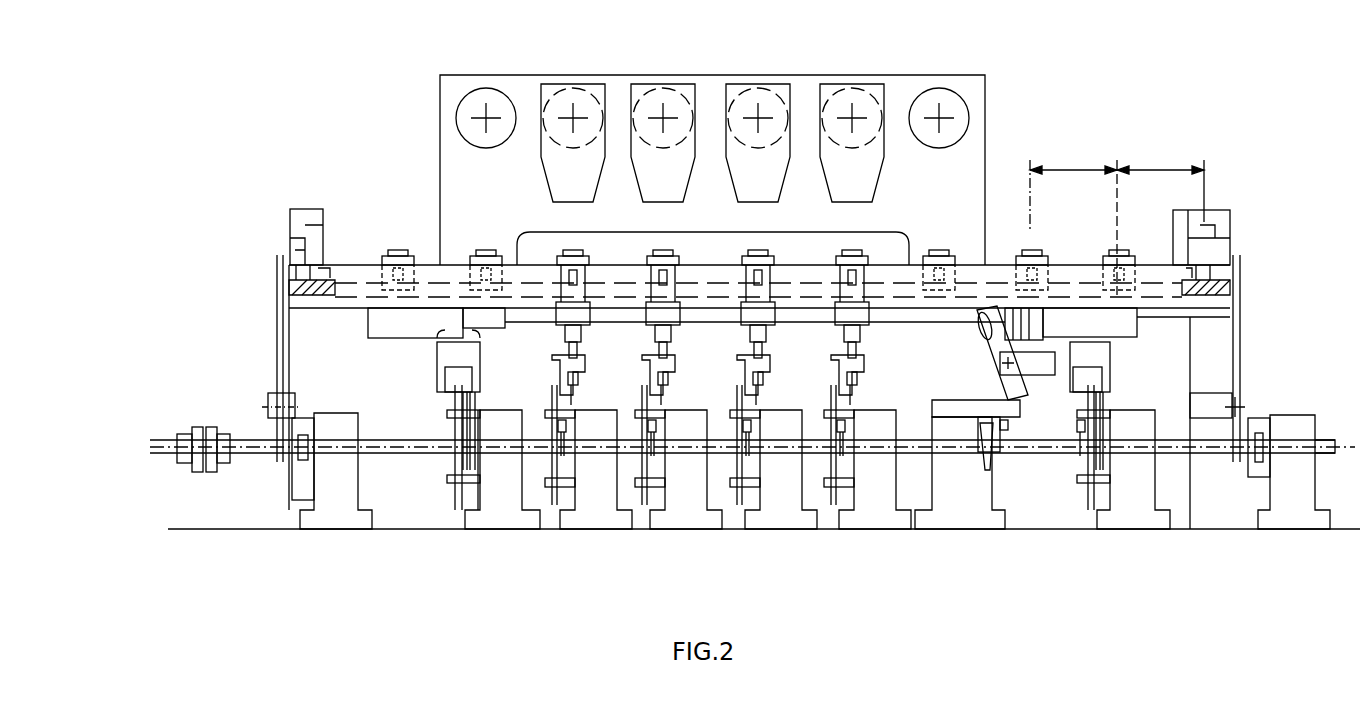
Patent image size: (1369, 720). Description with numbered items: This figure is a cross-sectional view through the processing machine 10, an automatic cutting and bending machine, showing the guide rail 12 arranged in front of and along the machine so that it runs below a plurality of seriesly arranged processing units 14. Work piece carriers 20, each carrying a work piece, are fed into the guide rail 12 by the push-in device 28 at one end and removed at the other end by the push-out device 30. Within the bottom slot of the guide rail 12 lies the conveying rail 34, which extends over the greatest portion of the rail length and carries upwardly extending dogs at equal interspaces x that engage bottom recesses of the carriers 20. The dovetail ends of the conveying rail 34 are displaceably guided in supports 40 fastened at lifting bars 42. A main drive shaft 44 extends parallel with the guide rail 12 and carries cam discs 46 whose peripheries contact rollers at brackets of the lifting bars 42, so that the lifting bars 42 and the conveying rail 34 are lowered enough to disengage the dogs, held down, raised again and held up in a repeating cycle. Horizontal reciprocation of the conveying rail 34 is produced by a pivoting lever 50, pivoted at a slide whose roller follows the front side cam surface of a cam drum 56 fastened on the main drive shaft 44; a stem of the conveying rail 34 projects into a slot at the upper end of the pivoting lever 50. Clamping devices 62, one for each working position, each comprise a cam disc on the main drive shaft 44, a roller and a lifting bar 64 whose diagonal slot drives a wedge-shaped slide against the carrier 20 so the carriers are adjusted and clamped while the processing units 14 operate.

The processing machine 10 is at (704, 98).
The processing units 14 is at (645, 155).
The guide rail 12 is at (357, 275).
The work piece carriers 20 is at (413, 262).
The push-in device 28 is at (280, 232).
The push-out device 30 is at (1237, 248).
The conveying rail 34 is at (1073, 290).
The supports 40 is at (1112, 336).
The lifting bars 42 is at (448, 462).
The main drive shaft 44 is at (1064, 450).
The cam discs 46 is at (490, 458).
The pivoting lever 50 is at (1000, 332).
The cam drum 56 is at (988, 440).
The clamping devices 62 is at (635, 325).
The lifting bar 64 is at (735, 395).